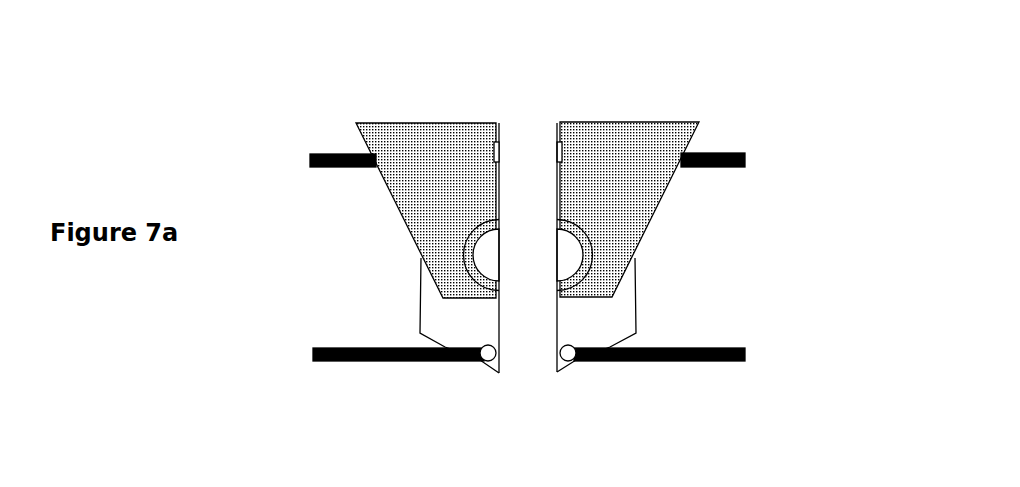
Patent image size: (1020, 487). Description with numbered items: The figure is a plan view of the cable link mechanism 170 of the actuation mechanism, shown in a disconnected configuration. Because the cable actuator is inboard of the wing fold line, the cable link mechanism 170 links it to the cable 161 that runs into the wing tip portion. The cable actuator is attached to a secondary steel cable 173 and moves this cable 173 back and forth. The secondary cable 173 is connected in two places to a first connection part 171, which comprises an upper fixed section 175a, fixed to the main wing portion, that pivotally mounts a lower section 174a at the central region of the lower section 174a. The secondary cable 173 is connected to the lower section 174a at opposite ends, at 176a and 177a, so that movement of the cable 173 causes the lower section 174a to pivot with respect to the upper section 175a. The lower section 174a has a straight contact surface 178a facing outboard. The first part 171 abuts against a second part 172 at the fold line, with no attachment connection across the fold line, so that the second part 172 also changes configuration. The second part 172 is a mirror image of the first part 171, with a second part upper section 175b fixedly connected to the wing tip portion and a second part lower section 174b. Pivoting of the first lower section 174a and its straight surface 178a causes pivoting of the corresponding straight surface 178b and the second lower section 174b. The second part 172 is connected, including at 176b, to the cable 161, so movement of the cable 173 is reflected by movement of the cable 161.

The cable link mechanism 170 is at (716, 78).
The first connection part 171 is at (418, 118).
The second part 172 is at (629, 111).
The secondary steel cable 173 is at (341, 362).
The cable 161 is at (678, 360).
The lower section 174a is at (440, 316).
The second part lower section 174b is at (608, 317).
The upper fixed section 175a is at (418, 195).
The second part upper section 175b is at (637, 207).
The cable connection 176a is at (488, 355).
The cable connection 176b is at (570, 355).
The cable connection 177a is at (498, 163).
The straight contact surface 178a is at (499, 320).
The straight surface 178b is at (557, 182).